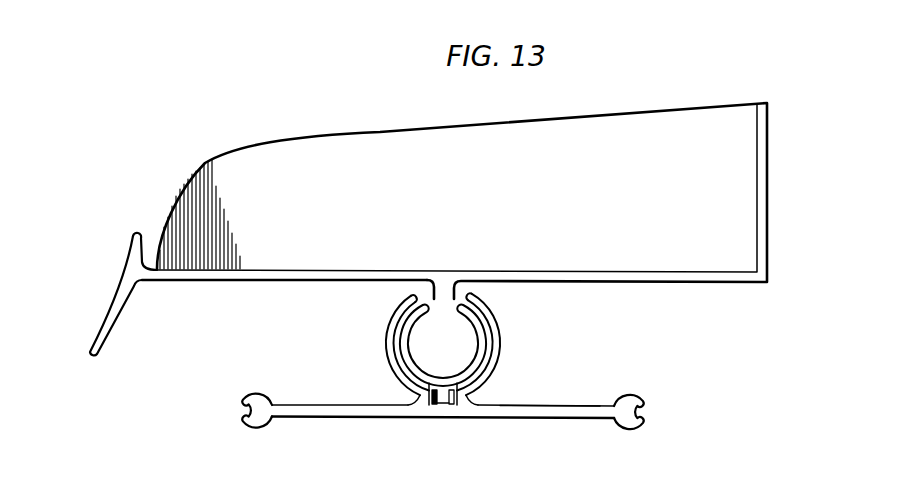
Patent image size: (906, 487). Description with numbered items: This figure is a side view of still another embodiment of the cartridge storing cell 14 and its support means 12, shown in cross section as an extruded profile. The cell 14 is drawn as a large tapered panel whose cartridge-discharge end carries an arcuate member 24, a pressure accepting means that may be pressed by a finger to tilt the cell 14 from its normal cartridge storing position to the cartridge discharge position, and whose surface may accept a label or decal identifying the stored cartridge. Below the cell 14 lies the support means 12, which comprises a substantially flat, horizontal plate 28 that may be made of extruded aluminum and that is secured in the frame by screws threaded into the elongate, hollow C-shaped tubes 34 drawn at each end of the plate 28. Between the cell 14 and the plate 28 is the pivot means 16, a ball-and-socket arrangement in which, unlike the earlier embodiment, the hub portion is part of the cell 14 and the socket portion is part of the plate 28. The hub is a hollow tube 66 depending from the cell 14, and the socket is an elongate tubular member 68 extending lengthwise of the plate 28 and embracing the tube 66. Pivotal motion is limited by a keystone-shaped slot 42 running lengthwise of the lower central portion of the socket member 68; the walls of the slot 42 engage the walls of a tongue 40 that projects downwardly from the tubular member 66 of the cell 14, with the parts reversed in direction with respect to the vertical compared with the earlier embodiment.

The support means 12 is at (435, 406).
The cell 14 is at (516, 198).
The pivot means 16 is at (424, 373).
The arcuate member 24 is at (120, 298).
The plate 28 is at (547, 405).
The C-shaped tube 34 is at (255, 388).
The tongue 40 is at (434, 407).
The keystone-shaped slot 42 is at (452, 407).
The hollow tube 66 is at (480, 328).
The tubular member 68 is at (492, 363).